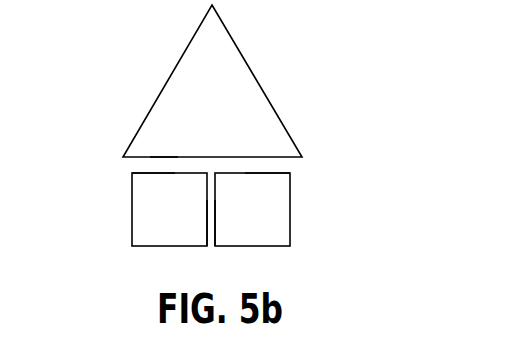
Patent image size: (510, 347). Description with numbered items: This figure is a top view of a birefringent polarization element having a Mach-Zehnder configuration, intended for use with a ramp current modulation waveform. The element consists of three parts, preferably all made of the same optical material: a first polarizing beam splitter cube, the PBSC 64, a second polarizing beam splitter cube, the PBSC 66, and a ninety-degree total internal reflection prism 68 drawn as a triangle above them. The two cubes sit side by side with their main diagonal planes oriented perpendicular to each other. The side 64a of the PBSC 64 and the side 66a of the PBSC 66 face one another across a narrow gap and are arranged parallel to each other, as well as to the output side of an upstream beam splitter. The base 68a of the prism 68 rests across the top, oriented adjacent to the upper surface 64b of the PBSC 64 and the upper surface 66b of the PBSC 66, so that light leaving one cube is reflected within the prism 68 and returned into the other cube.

The total internal reflection prism 68 is at (260, 82).
The base of the prism 68a is at (177, 157).
The PBSC 64 is at (132, 202).
The side of the PBSC 64a is at (206, 223).
The surface of the PBSC 64b is at (145, 173).
The PBSC 66 is at (290, 203).
The side of the PBSC 66a is at (218, 222).
The surface of the PBSC 66b is at (280, 173).